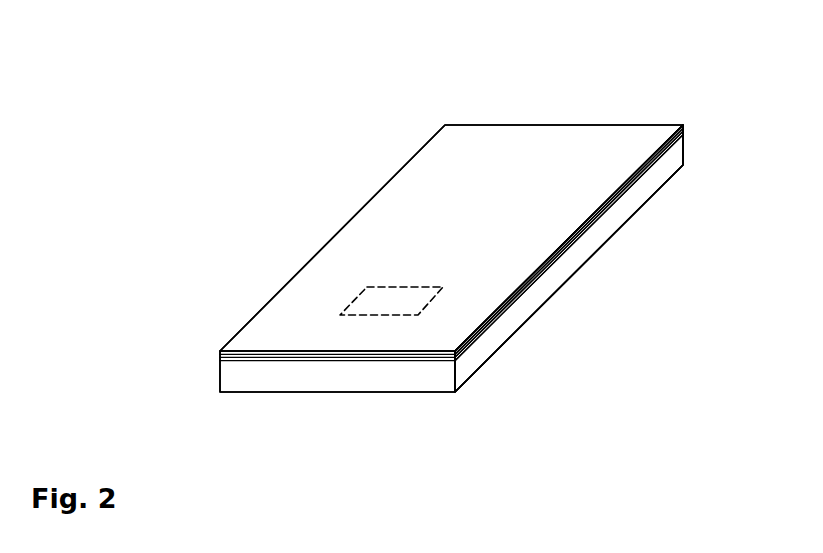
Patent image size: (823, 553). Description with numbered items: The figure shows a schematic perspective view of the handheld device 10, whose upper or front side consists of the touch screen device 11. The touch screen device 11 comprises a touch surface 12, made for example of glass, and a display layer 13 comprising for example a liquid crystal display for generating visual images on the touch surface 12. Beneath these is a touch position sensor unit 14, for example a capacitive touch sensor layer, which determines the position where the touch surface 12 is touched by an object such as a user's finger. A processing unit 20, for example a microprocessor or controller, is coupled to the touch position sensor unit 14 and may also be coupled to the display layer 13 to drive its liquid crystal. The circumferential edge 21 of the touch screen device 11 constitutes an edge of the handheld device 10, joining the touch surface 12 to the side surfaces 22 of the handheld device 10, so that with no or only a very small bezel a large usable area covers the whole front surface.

The handheld device 10 is at (712, 80).
The touch screen device 11 is at (325, 243).
The touch surface 12 is at (548, 222).
The display layer 13 is at (223, 353).
The touch position sensor unit 14 is at (225, 360).
The processing unit 20 is at (433, 288).
The circumferential edge 21 is at (605, 202).
The side surfaces 22 is at (385, 378).